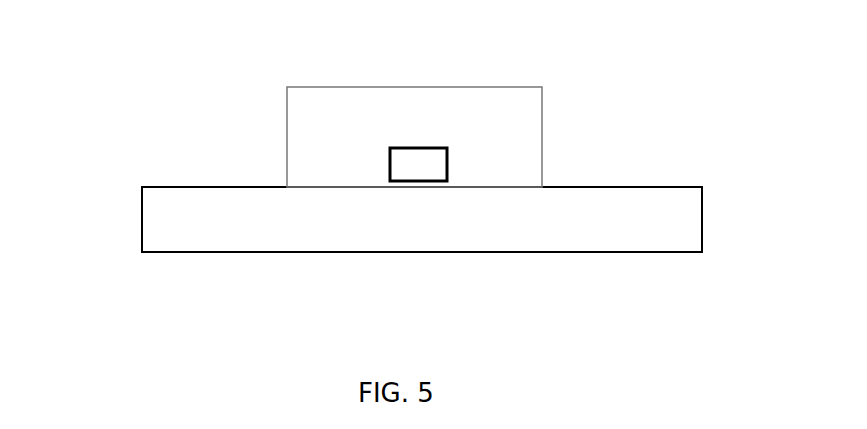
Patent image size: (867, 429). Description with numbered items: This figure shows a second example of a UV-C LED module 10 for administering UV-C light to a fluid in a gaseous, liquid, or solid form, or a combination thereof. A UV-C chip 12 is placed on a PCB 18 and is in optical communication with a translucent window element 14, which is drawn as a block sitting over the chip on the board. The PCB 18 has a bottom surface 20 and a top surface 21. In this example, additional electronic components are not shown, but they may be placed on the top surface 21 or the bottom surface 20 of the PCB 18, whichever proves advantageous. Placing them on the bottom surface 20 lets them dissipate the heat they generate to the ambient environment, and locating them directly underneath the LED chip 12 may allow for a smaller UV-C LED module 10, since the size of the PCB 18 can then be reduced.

The UV-C LED module 10 is at (152, 92).
The UV-C chip 12 is at (413, 173).
The translucent window element 14 is at (525, 105).
The PCB 18 is at (142, 220).
The bottom surface 20 is at (535, 257).
The top surface 21 is at (650, 178).